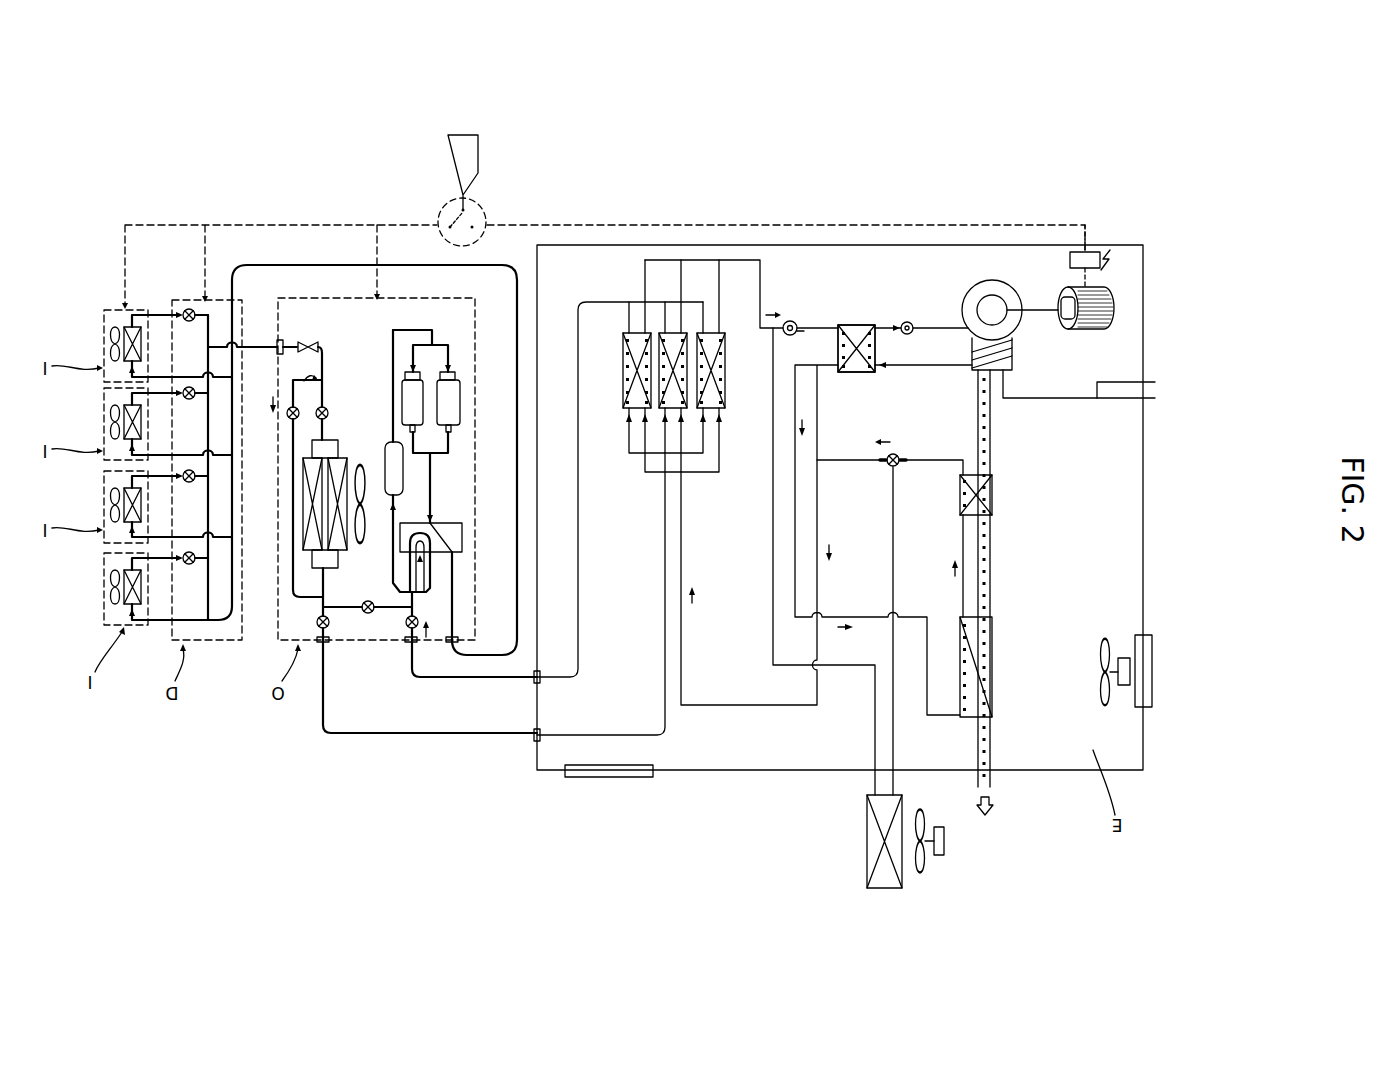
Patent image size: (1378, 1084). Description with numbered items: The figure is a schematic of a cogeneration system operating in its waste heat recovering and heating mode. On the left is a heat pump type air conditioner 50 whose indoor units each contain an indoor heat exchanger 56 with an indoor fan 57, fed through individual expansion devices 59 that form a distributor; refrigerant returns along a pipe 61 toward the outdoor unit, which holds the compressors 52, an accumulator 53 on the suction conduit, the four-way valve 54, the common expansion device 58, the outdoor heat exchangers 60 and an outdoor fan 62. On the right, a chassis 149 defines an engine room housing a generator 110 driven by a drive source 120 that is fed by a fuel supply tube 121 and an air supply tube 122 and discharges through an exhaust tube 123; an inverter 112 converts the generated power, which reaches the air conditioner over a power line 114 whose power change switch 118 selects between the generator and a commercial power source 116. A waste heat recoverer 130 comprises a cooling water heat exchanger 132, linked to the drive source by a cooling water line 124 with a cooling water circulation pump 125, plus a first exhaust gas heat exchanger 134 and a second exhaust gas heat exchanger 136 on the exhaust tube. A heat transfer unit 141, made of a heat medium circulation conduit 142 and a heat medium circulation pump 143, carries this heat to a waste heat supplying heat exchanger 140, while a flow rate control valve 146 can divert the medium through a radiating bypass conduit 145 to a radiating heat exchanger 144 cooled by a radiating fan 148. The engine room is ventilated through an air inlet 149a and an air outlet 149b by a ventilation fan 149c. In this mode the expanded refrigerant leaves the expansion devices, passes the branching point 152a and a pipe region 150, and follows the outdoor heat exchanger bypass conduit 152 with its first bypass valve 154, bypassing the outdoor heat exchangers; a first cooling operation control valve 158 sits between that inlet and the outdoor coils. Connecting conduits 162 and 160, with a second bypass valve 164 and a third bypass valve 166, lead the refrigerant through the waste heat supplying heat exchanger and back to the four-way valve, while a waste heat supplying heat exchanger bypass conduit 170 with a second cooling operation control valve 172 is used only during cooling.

The heat pump type air conditioner 50 is at (273, 713).
The compressors 52 is at (461, 398).
The accumulator 53 is at (405, 470).
The 4-way valve 54 is at (462, 536).
The indoor heat exchangers 56 is at (113, 330).
The indoor fan 57 is at (111, 350).
The expansion device 58 is at (305, 339).
The expansion devices 59 is at (190, 321).
The outdoor heat exchangers 60 is at (303, 530).
The refrigerant return pipe 61 is at (258, 264).
The outdoor fan 62 is at (361, 462).
The generator 110 is at (1109, 303).
The inverter 112 is at (1091, 251).
The power line 114 is at (680, 223).
The commercial power source 116 is at (450, 141).
The power change switch 118 is at (446, 212).
The drive source 120 is at (992, 281).
The fuel supply tube 121 is at (1131, 398).
The air supply tube 122 is at (1131, 382).
The exhaust tube 123 is at (991, 428).
The cooling water line 124 is at (877, 327).
The cooling water circulation pump 125 is at (907, 321).
The waste heat recoverer 130 is at (1208, 505).
The cooling water heat exchanger 132 is at (866, 373).
The first exhaust gas heat exchanger 134 is at (991, 502).
The second exhaust gas heat exchanger 136 is at (991, 648).
The waste heat supplying heat exchanger 140 is at (631, 335).
The heat transfer unit 141 is at (750, 170).
The heat medium circulation conduit 142 is at (748, 266).
The heat medium circulation pump 143 is at (790, 320).
The radiating heat exchanger 144 is at (866, 835).
The radiating bypass conduit 145 is at (871, 750).
The flow rate control valve 146 is at (890, 468).
The radiating fan 148 is at (926, 868).
The chassis 149 is at (1146, 720).
The air inlet 149a is at (1153, 668).
The air outlet 149b is at (568, 778).
The ventilation fan 149c is at (1109, 722).
The pipe junction 150 is at (307, 747).
The outdoor heat exchanger bypass conduit 152 is at (279, 600).
The branching point or inlet 152a is at (323, 378).
The first bypass valve 154 is at (289, 419).
The first cooling operation control valve 158 is at (328, 408).
The waste heat supplying heat exchanger connecting conduit 160 is at (452, 746).
The waste heat supplying heat exchanger connecting conduit 162 is at (493, 689).
The second bypass valve 164 is at (413, 645).
The third bypass valve 166 is at (325, 645).
The waste heat supplying heat exchanger bypass conduit 170 is at (381, 643).
The second cooling operation control valve 172 is at (366, 643).